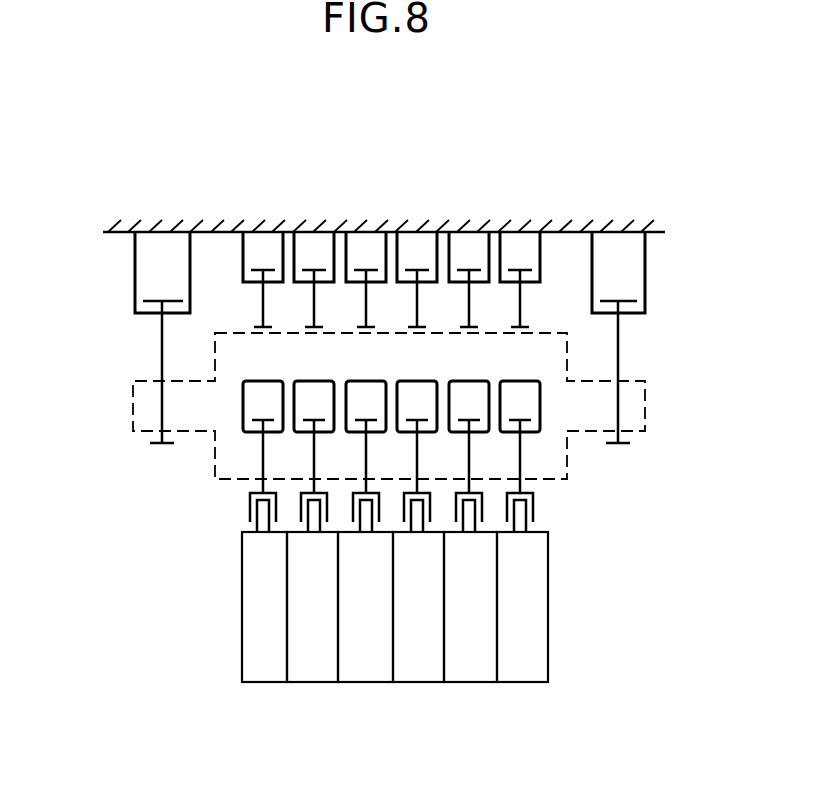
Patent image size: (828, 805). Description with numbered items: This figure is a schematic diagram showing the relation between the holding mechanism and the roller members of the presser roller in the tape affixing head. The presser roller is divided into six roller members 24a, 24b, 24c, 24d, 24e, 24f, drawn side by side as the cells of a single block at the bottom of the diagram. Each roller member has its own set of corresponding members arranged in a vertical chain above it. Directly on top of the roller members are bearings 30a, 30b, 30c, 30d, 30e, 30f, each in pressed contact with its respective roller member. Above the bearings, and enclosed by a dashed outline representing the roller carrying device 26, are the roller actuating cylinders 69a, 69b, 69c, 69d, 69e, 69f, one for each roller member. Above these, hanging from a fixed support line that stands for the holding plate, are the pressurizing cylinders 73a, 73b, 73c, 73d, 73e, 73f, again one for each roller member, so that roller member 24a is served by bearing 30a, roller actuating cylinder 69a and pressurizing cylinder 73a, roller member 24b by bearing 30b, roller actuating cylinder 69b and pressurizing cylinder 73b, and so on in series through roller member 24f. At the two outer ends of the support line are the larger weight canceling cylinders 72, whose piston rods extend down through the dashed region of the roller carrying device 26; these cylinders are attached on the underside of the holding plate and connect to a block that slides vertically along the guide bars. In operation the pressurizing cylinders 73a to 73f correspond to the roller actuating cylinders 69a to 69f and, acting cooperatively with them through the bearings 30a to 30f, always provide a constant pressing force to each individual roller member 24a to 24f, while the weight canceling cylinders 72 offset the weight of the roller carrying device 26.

The weight canceling cylinder 72 is at (135, 280).
The pressurizing cylinder 73a is at (254, 245).
The pressurizing cylinder 73b is at (310, 243).
The pressurizing cylinder 73c is at (360, 245).
The pressurizing cylinder 73d is at (413, 242).
The pressurizing cylinder 73e is at (466, 243).
The pressurizing cylinder 73f is at (516, 243).
The roller carrying device 26 is at (647, 407).
The roller actuating cylinder 69a is at (257, 403).
The roller actuating cylinder 69b is at (313, 397).
The roller actuating cylinder 69c is at (366, 393).
The roller actuating cylinder 69d is at (420, 395).
The roller actuating cylinder 69e is at (470, 393).
The roller actuating cylinder 69f is at (524, 402).
The bearing 30a is at (262, 523).
The bearing 30b is at (313, 520).
The bearing 30c is at (366, 520).
The bearing 30d is at (417, 520).
The bearing 30e is at (469, 520).
The bearing 30f is at (523, 523).
The roller member 24a is at (262, 668).
The roller member 24b is at (312, 665).
The roller member 24c is at (368, 668).
The roller member 24d is at (418, 660).
The roller member 24e is at (480, 663).
The roller member 24f is at (533, 663).